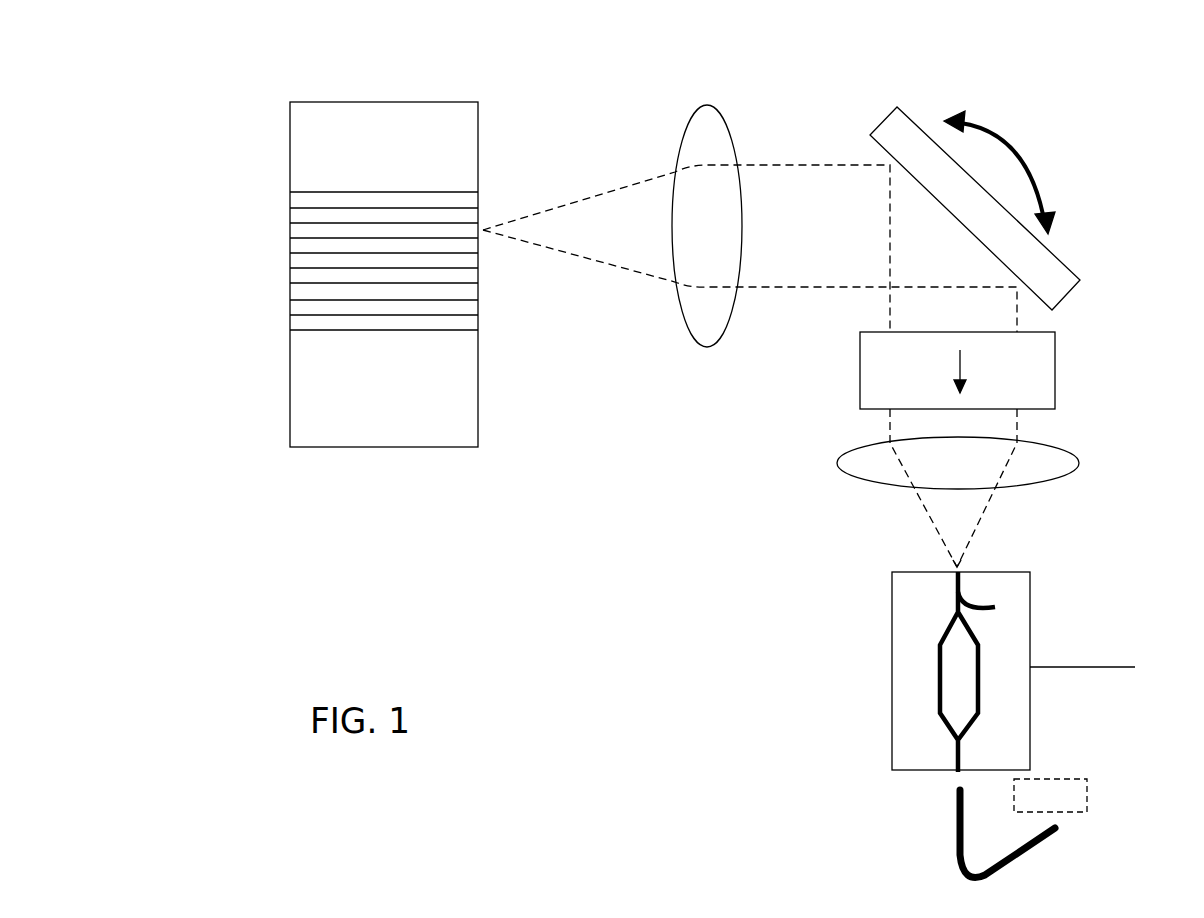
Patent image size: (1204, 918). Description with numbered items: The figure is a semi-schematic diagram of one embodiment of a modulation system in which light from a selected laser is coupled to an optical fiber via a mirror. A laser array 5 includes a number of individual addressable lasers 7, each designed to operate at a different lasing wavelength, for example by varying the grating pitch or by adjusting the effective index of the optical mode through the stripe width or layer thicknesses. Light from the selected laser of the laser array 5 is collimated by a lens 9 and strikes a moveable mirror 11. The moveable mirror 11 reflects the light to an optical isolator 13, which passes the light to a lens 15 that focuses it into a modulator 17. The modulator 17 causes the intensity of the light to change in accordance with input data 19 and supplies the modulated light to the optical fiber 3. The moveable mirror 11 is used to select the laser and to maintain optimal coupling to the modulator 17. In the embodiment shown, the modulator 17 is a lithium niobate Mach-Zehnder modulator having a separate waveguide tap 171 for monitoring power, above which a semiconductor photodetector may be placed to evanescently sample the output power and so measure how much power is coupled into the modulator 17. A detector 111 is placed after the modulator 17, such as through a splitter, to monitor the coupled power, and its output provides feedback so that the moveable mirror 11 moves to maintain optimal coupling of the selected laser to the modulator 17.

The optical fiber 3 is at (955, 810).
The laser array 5 is at (388, 447).
The individual addressable lasers 7 is at (301, 263).
The lens 9 is at (690, 115).
The moveable mirror 11 is at (878, 122).
The optical isolator 13 is at (1055, 368).
The lens 15 is at (1080, 455).
The modulator 17 is at (890, 655).
The waveguide tap 171 is at (980, 583).
The input data 19 is at (1093, 646).
The detector 111 is at (1087, 795).